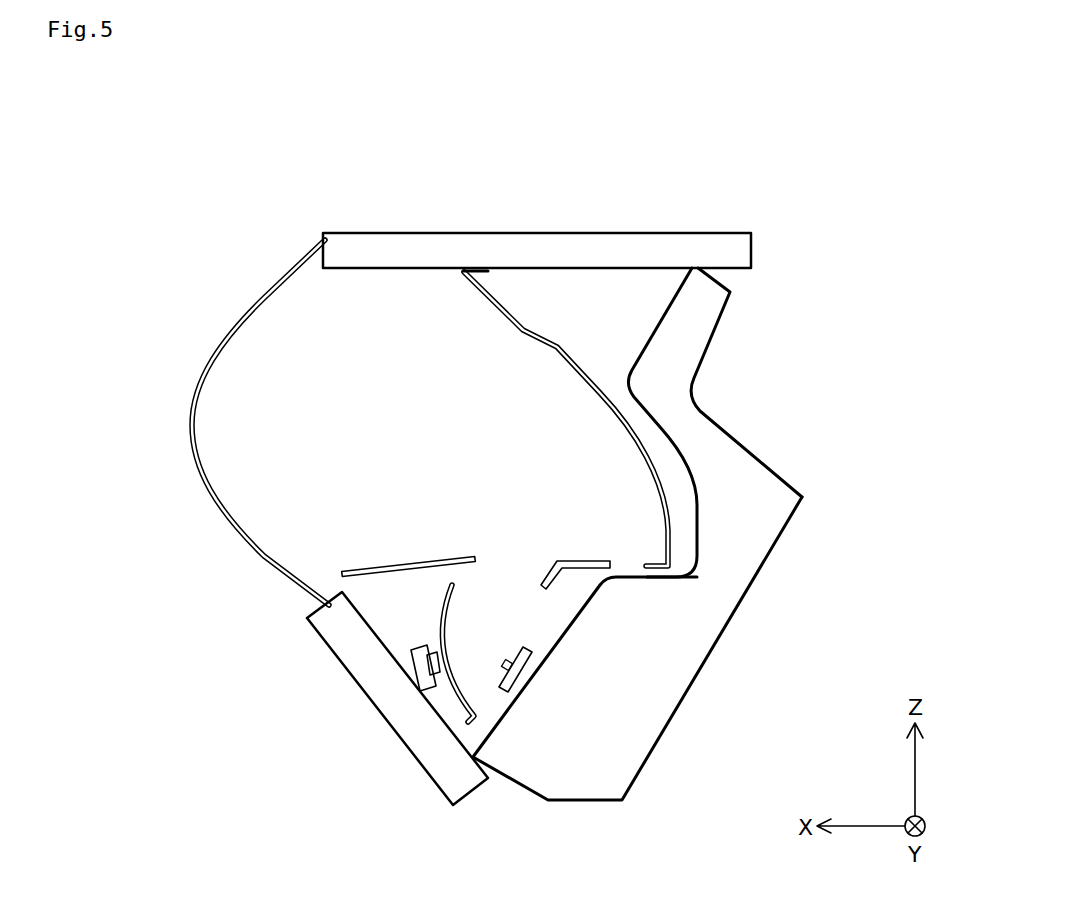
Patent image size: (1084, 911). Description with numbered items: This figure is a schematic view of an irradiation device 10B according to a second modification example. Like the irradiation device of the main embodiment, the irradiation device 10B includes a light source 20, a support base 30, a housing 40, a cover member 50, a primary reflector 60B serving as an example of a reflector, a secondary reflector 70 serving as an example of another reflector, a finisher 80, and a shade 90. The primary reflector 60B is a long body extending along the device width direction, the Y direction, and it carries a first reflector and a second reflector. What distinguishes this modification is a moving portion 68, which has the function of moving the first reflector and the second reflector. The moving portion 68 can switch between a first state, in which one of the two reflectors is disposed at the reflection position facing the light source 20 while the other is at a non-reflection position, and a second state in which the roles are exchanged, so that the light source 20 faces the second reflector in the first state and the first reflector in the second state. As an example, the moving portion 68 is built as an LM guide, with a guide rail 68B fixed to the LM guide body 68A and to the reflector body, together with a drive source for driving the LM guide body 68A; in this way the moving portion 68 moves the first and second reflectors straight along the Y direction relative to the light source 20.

The irradiation device 10B is at (220, 191).
The light source 20 is at (499, 687).
The support base 30 is at (710, 627).
The housing 40 is at (587, 243).
The cover member 50 is at (254, 561).
The primary reflector 60B is at (422, 638).
The moving portion 68 is at (293, 716).
The LM guide body 68A is at (417, 667).
The guide rail 68B is at (430, 683).
The secondary reflector 70 is at (643, 443).
The finisher 80 is at (370, 565).
The shade 90 is at (590, 556).